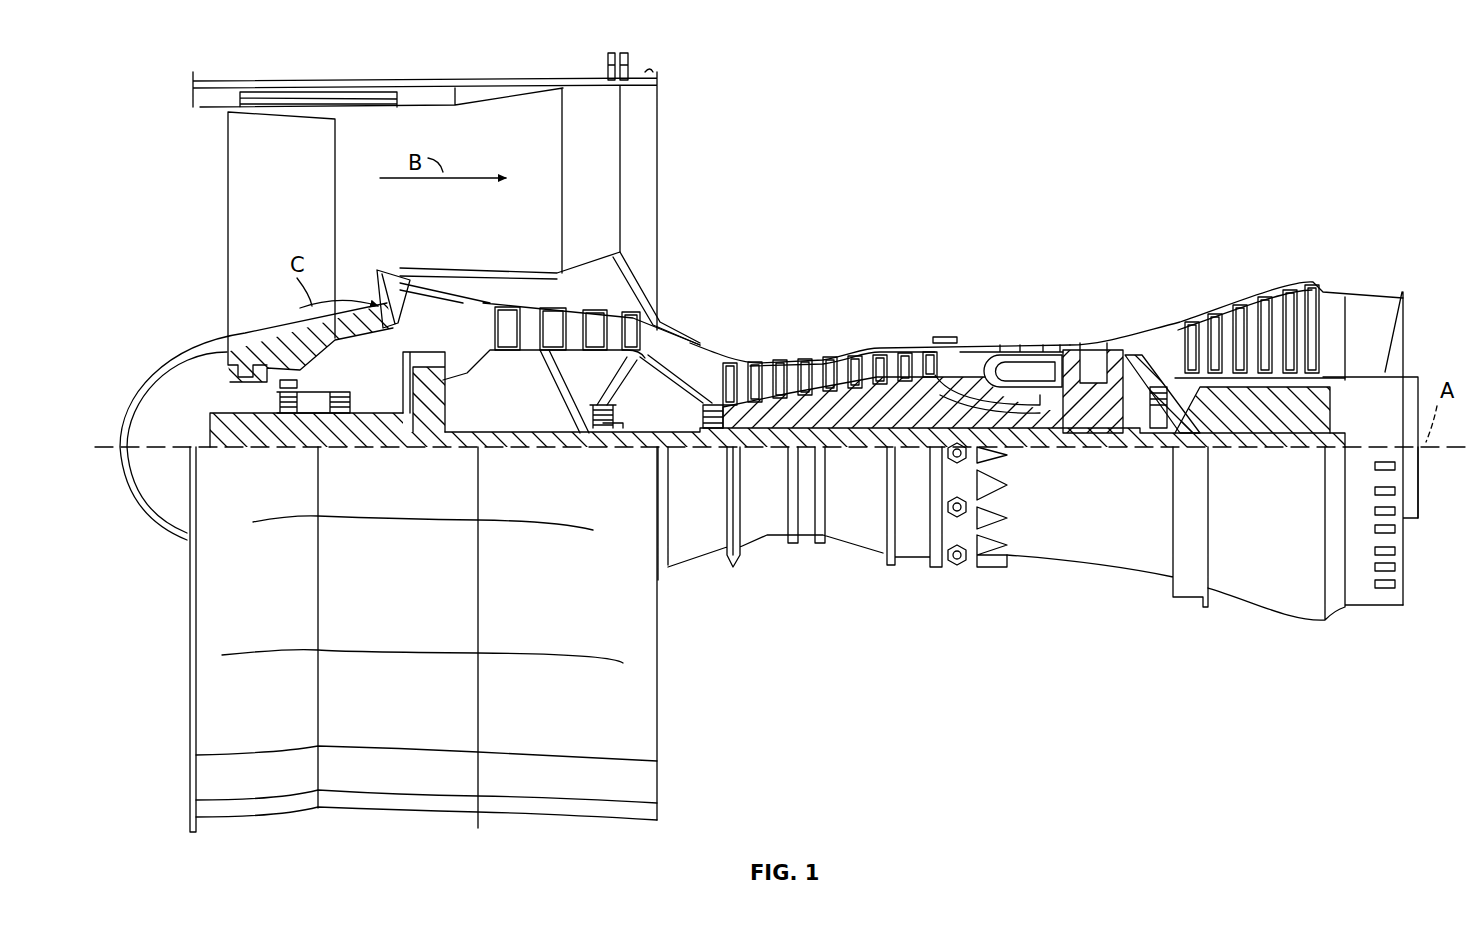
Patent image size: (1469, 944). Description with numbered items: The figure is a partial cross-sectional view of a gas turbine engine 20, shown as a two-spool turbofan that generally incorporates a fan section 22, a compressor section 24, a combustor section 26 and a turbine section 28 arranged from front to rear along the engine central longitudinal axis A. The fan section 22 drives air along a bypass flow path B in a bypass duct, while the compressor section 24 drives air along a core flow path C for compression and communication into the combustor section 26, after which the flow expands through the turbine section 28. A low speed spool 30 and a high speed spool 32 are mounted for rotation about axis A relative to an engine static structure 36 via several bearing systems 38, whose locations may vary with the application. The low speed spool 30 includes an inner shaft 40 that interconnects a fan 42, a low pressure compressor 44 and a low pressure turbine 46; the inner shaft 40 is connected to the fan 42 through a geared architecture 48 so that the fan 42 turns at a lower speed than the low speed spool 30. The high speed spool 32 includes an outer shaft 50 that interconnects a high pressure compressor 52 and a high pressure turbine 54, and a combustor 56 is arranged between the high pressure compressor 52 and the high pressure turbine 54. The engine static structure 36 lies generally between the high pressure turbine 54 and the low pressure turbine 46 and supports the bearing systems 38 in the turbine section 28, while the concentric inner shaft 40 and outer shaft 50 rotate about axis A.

The gas turbine engine 20 is at (1226, 119).
The fan section 22 is at (302, 72).
The compressor section 24 is at (849, 305).
The combustor section 26 is at (1010, 304).
The turbine section 28 is at (1158, 286).
The low speed spool 30 is at (876, 460).
The high speed spool 32 is at (930, 392).
The engine static structure 36 is at (915, 570).
The bearing systems 38 is at (287, 420).
The inner shaft 40 is at (671, 451).
The fan 42 is at (303, 203).
The low pressure compressor 44 is at (578, 322).
The low pressure turbine 46 is at (1258, 306).
The geared architecture 48 is at (425, 413).
The outer shaft 50 is at (1040, 441).
The high pressure compressor 52 is at (835, 418).
The high pressure turbine 54 is at (1098, 342).
The combustor 56 is at (1018, 368).